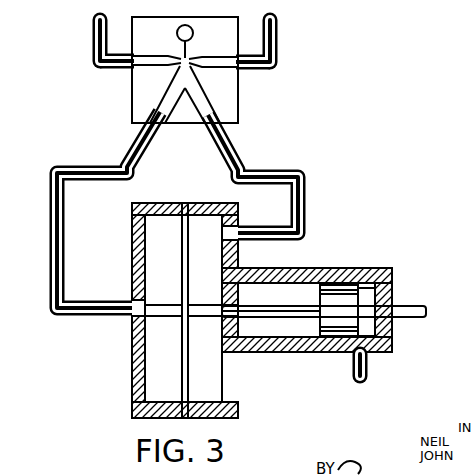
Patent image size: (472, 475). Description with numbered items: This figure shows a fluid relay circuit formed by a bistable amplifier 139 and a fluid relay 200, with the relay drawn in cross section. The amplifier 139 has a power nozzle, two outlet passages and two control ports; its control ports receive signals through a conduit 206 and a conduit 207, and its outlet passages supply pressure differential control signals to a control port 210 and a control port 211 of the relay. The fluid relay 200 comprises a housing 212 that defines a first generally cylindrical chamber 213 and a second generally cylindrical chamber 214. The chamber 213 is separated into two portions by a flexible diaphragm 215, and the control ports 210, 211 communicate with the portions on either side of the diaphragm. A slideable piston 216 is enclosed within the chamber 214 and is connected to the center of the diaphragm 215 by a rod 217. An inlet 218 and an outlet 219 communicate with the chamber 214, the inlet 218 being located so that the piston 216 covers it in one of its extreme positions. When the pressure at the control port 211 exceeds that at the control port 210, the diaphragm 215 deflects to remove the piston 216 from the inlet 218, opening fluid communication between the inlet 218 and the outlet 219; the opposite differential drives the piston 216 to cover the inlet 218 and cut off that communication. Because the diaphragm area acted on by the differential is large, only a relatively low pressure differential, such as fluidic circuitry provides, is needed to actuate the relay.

The amplifier 139 is at (238, 107).
The fluid relay 200 is at (333, 240).
The conduit 206 is at (93, 38).
The conduit 207 is at (278, 34).
The control port 210 is at (51, 218).
The control port 211 is at (305, 237).
The housing 212 is at (268, 268).
The first generally cylindrical chamber 213 is at (162, 248).
The second generally cylindrical chamber 214 is at (367, 295).
The flexible diaphragm 215 is at (180, 380).
The slideable piston 216 is at (314, 329).
The rod 217 is at (250, 317).
The inlet 218 is at (368, 372).
The outlet 219 is at (410, 319).